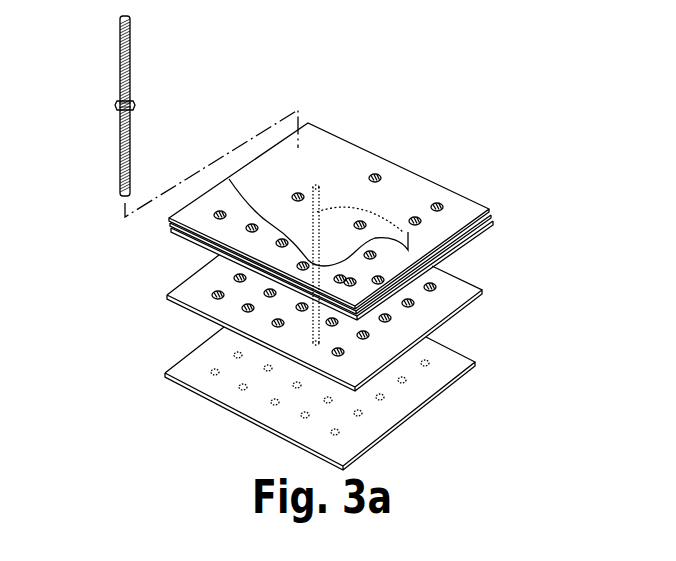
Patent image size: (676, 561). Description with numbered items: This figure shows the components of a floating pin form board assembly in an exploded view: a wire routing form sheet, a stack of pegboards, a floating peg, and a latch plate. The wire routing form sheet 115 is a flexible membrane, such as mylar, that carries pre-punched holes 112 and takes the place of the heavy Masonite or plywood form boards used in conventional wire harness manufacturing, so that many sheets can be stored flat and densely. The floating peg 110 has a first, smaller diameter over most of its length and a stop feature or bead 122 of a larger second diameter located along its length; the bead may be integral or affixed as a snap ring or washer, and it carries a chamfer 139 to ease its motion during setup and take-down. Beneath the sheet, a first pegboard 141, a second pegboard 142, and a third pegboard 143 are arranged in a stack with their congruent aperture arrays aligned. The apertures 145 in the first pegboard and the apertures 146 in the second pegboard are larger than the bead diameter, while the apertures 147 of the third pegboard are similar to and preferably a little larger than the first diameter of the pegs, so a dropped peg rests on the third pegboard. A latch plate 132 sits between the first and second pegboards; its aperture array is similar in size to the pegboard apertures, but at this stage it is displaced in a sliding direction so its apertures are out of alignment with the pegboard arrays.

The floating peg 110 is at (294, 180).
The chamfer 139 is at (121, 100).
The bead 122 is at (116, 107).
The pre-punched holes 112 is at (378, 172).
The wire routing form sheet 115 is at (286, 187).
The first pegboard 141 is at (486, 213).
The latch plate 132 is at (493, 222).
The second pegboard 142 is at (291, 323).
The third pegboard 143 is at (281, 398).
The apertures in the first pegboard 145 is at (248, 231).
The apertures in the second pegboard 146 is at (245, 311).
The apertures of the third pegboard 147 is at (273, 406).